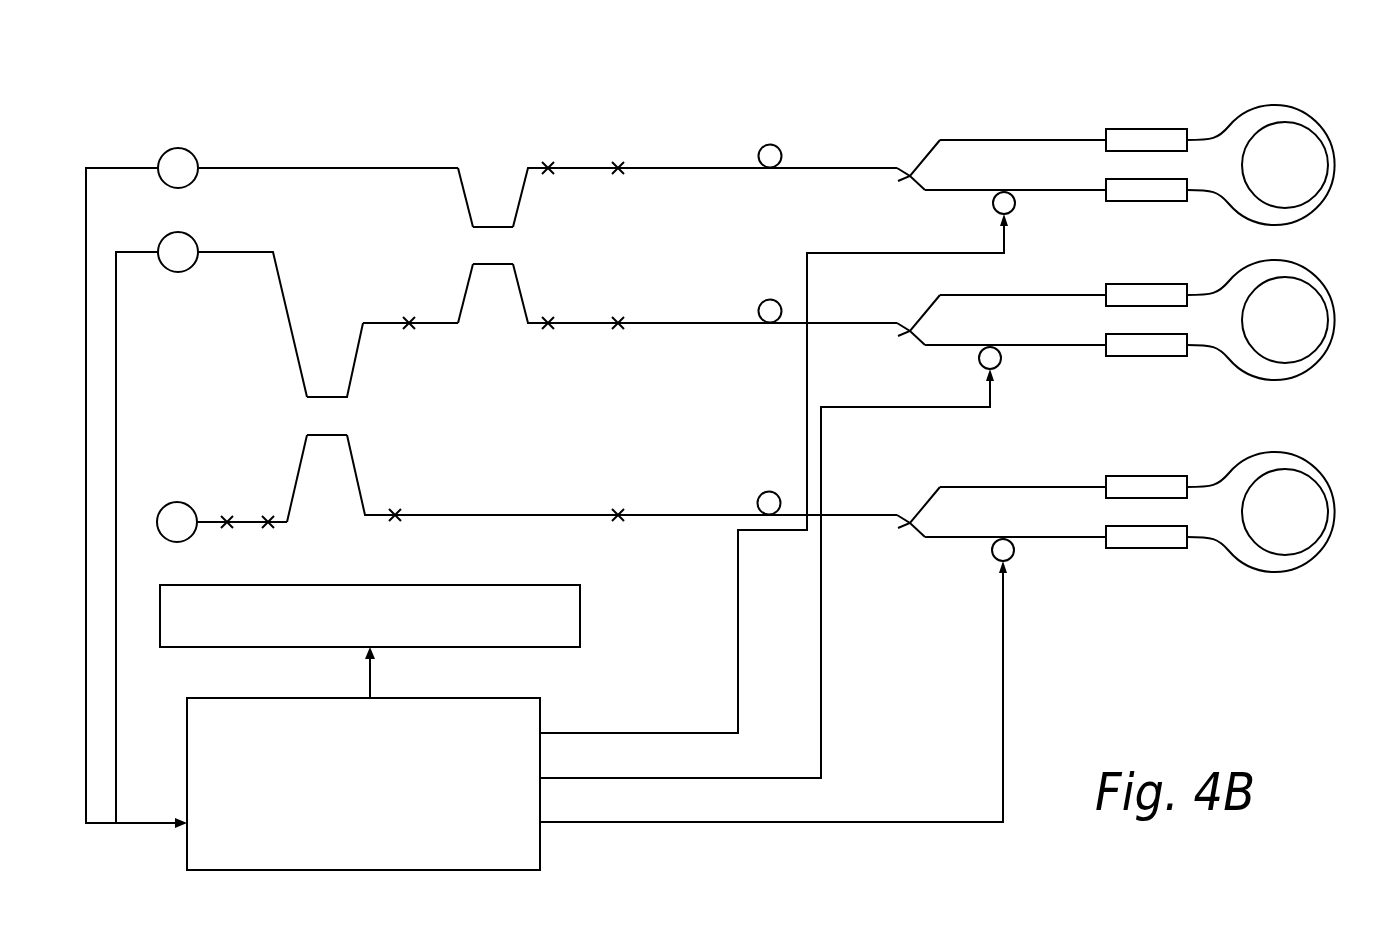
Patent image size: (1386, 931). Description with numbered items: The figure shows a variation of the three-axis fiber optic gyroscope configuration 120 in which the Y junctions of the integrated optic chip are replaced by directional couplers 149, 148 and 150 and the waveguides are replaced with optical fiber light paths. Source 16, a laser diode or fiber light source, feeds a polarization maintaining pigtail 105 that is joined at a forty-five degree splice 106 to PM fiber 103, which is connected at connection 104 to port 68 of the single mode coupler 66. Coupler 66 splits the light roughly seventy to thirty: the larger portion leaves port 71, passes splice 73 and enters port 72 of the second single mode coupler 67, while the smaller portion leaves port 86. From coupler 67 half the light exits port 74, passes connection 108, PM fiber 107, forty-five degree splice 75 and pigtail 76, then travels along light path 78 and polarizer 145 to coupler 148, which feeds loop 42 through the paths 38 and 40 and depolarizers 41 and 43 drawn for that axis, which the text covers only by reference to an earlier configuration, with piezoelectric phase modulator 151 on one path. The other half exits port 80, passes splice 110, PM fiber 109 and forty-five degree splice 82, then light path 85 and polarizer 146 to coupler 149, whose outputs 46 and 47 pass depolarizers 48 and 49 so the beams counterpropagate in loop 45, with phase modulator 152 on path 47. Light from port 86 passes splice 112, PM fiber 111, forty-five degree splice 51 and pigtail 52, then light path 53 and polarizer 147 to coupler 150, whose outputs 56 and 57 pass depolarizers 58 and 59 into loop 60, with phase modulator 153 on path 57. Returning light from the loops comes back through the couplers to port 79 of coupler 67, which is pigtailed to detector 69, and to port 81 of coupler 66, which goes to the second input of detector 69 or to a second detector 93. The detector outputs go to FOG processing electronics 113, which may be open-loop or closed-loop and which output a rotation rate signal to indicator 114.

The configuration 120 is at (1195, 62).
The detector 69 is at (178, 148).
The second detector 93 is at (178, 272).
The source 16 is at (177, 502).
The port 81 is at (277, 262).
The single mode fiber optic coupler 66 is at (315, 414).
The single mode fiber optic coupler 67 is at (474, 244).
The port 79 is at (461, 176).
The port 80 is at (525, 178).
The PM fiber 109 is at (588, 166).
The connection splice 110 is at (551, 173).
The splice 82 is at (620, 173).
The waveguide 85 is at (720, 166).
The polarizer 146 is at (770, 146).
The directional coupler 149 is at (905, 184).
The waveguide 46 is at (925, 160).
The waveguide 47 is at (921, 185).
The depolarizer 48 is at (1160, 128).
The depolarizer 49 is at (1162, 180).
The loop 45 is at (1333, 166).
The optical fiber piezoelectric phase modulator 152 is at (1015, 205).
The port 71 is at (360, 323).
The splice 73 is at (409, 317).
The port 72 is at (462, 306).
The port 74 is at (524, 307).
The connection 108 is at (549, 318).
The PM fiber 107 is at (580, 327).
The splice 75 is at (619, 318).
The PM pigtail fiber 76 is at (655, 327).
The waveguide 78 is at (720, 327).
The polarizer 145 is at (768, 300).
The directional coupler 148 is at (905, 339).
The coupler output fiber 38 is at (925, 316).
The coupler output fiber 40 is at (921, 343).
The phase modulator 41 is at (1162, 285).
The phase modulator 43 is at (1165, 335).
The loop 42 is at (1334, 322).
The optical fiber piezoelectric phase modulator 151 is at (1001, 362).
The PM pigtail 105 is at (198, 532).
The splice 106 is at (227, 516).
The PM fiber 103 is at (247, 527).
The connection 104 is at (270, 528).
The port 68 is at (296, 482).
The port 86 is at (370, 514).
The splice 112 is at (396, 521).
The PM fiber 111 is at (505, 513).
The splice 51 is at (618, 509).
The PM pigtail 52 is at (620, 522).
The waveguide 53 is at (708, 519).
The polarizer 147 is at (766, 492).
The directional coupler 150 is at (905, 531).
The waveguide 56 is at (925, 508).
The waveguide 57 is at (921, 536).
The depolarizer 58 is at (1162, 477).
The depolarizer 59 is at (1150, 527).
The loop 60 is at (1334, 513).
The optical fiber piezoelectric phase modulator 153 is at (1014, 552).
The indicator 114 is at (437, 584).
The FOG processing electronics 113 is at (265, 697).